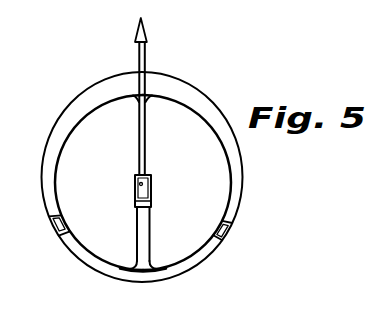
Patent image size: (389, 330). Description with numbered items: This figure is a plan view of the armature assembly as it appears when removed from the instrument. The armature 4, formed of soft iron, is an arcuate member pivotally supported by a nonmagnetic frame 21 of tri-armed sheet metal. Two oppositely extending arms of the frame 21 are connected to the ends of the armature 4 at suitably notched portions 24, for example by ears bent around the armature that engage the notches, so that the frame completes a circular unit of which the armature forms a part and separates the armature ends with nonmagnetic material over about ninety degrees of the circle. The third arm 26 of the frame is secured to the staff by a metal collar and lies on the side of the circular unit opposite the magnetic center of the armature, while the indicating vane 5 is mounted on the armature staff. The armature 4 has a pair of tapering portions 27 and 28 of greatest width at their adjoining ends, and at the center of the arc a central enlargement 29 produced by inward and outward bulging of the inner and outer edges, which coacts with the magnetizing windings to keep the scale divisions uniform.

The armature 4 is at (68, 108).
The indicating vane 5 is at (147, 38).
The nonmagnetic frame 21 is at (188, 265).
The notched portions 24 is at (63, 222).
The third arm 26 is at (140, 233).
The tapering portion 27 is at (92, 112).
The tapering portion 28 is at (187, 112).
The central enlargement 29 is at (133, 78).